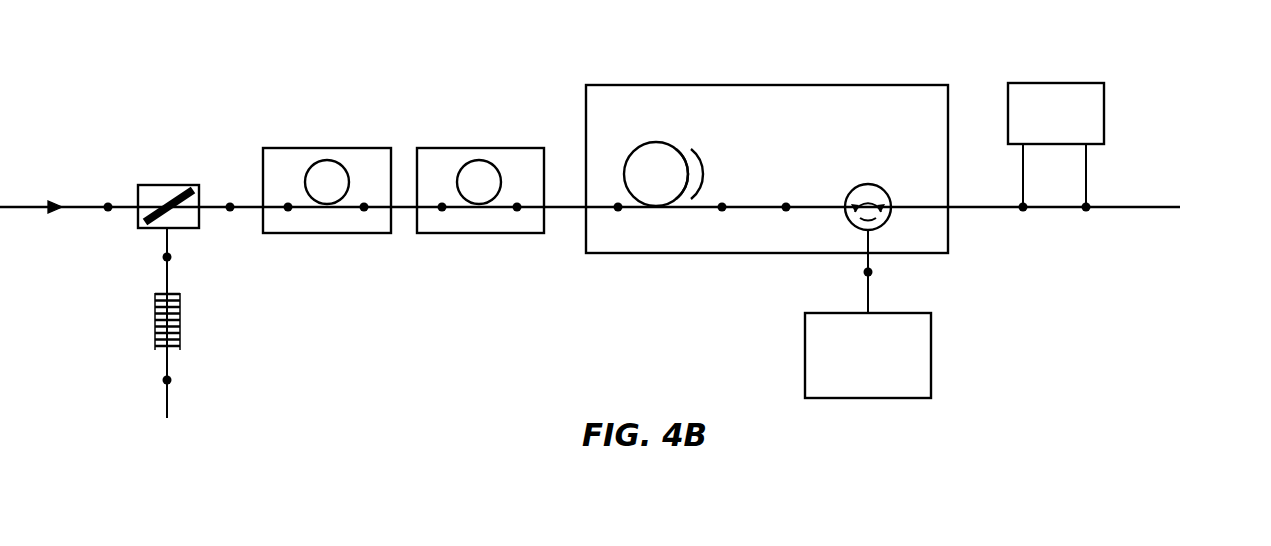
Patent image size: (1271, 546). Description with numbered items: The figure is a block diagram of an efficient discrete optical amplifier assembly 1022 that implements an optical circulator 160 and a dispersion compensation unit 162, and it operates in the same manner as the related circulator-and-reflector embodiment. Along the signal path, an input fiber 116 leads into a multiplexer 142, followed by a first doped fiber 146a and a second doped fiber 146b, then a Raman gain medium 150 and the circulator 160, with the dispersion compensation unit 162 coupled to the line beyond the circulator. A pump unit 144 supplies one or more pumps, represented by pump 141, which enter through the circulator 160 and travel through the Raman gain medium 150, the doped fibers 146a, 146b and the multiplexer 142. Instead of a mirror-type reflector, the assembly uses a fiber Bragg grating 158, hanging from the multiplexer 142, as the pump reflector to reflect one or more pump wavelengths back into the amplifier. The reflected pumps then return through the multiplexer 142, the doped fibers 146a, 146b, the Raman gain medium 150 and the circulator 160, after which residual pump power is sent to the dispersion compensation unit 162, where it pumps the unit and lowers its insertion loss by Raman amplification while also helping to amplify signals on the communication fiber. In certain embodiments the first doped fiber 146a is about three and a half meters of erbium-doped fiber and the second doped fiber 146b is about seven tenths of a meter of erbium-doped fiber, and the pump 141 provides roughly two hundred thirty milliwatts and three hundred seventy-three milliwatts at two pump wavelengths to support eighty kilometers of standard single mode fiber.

The optical fiber input 116 is at (590, 197).
The multiplexer 142 is at (167, 185).
The fiber Bragg grating 158 is at (155, 327).
The doped fiber 146a is at (327, 148).
The doped fiber 146b is at (481, 148).
The Raman gain medium 150 is at (670, 142).
The optical circulator 160 is at (851, 188).
The pump 141 is at (866, 300).
The pump unit 144 is at (850, 366).
The dispersion compensation unit 162 is at (1105, 114).
The efficient discrete optical amplifier assembly 1022 is at (1162, 76).